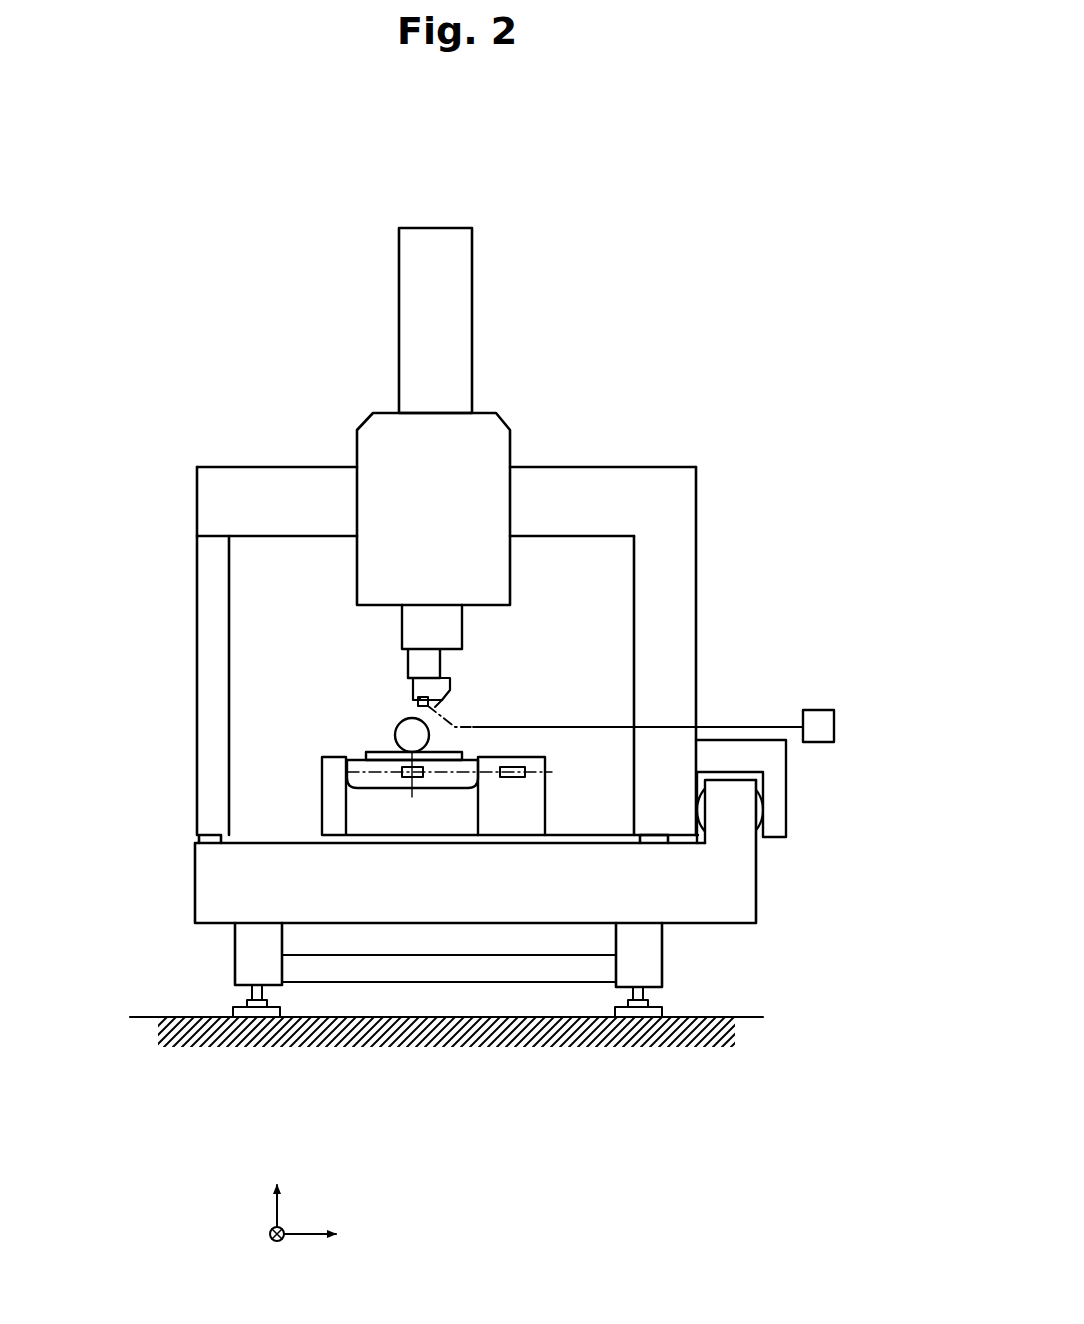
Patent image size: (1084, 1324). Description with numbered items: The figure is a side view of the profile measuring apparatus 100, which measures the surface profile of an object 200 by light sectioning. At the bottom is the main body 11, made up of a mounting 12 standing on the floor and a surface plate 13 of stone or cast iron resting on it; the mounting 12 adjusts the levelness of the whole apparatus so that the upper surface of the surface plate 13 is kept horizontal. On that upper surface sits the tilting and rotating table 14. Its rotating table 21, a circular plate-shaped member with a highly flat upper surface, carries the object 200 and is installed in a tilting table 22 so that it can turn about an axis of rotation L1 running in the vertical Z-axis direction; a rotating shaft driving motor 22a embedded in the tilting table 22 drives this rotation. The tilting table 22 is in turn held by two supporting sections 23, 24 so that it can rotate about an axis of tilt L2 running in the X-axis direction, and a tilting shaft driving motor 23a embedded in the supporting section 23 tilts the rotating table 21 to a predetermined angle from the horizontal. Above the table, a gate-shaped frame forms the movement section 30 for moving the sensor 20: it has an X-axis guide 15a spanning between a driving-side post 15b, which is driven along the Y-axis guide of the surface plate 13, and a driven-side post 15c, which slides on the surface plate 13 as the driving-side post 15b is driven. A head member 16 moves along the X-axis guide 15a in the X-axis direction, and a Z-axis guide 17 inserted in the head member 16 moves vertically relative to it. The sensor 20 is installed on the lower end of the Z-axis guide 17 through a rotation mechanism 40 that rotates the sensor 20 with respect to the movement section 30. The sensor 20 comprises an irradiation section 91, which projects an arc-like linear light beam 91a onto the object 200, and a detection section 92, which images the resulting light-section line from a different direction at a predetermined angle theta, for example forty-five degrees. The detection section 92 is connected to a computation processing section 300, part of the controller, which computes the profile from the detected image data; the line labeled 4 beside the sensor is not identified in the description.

The profile measuring apparatus 100 is at (672, 240).
The main body 11 is at (547, 878).
The mounting 12 is at (650, 962).
The surface plate 13 is at (750, 878).
The tilting and rotating table 14 is at (478, 730).
The X-axis guide 15a is at (292, 479).
The driving-side post 15b is at (675, 590).
The driven-side post 15c is at (210, 588).
The head member 16 is at (488, 432).
The Z-axis guide 17 is at (451, 278).
The sensor 20 is at (434, 680).
The object 200 is at (400, 732).
The rotating table 21 is at (380, 748).
The tilting table 22 is at (382, 780).
The rotating shaft driving motor 22a is at (400, 788).
The supporting section 23 is at (551, 787).
The tilting shaft driving motor 23a is at (515, 781).
The supporting section 24 is at (333, 812).
The movement section 30 is at (446, 612).
The computation processing section 300 is at (810, 710).
The probe axis 4 is at (465, 722).
The rotation mechanism 40 is at (420, 658).
The irradiation section 91 is at (420, 703).
The linear light beam 91a is at (415, 708).
The detection section 92 is at (440, 702).
The axis of rotation L1 is at (428, 740).
The axis of tilt L2 is at (533, 769).